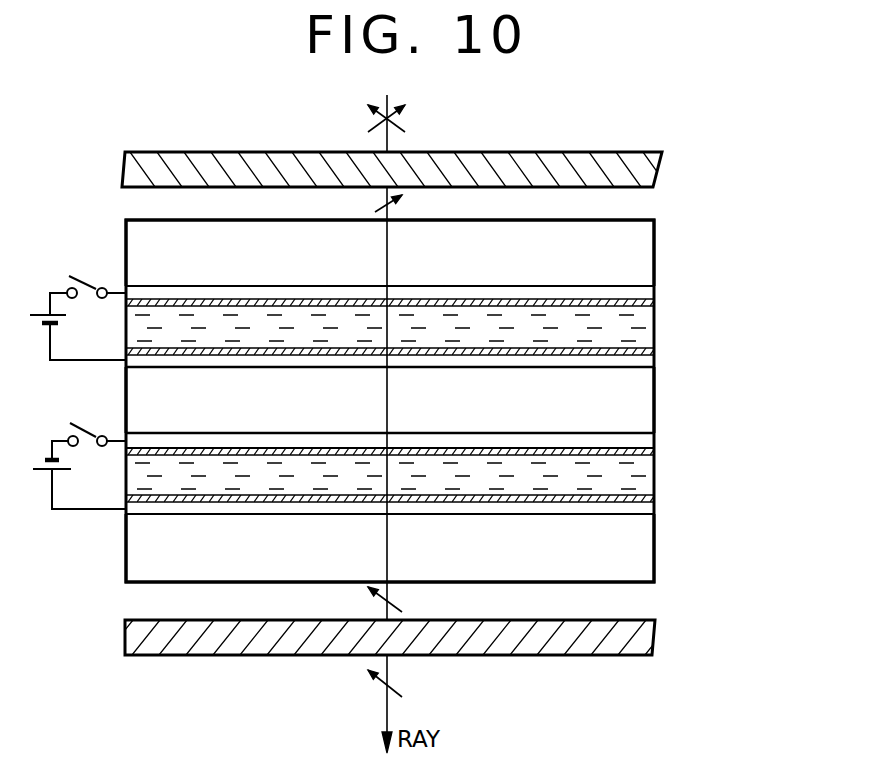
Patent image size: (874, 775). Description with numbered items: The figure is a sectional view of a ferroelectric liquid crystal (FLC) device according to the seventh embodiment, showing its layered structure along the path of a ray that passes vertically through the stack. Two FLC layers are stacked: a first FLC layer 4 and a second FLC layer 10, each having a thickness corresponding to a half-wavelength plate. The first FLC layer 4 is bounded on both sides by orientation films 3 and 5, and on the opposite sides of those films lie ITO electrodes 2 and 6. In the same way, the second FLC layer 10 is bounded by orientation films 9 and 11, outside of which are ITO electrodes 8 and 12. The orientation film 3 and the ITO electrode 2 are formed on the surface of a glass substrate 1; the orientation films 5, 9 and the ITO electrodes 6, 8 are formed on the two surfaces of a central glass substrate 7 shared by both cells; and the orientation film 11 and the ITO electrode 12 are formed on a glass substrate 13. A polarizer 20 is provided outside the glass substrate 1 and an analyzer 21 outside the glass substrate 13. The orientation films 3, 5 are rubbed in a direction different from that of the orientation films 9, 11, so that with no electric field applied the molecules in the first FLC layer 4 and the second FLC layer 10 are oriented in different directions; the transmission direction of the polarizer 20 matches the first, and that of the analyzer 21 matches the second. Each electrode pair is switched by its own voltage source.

The glass substrate 1 is at (655, 248).
The ITO electrode 2 is at (655, 293).
The orientation film 3 is at (655, 307).
The first FLC layer 4 is at (655, 328).
The orientation film 5 is at (655, 353).
The ITO electrode 6 is at (655, 368).
The glass substrate 7 is at (655, 415).
The ITO electrode 8 is at (655, 447).
The orientation film 9 is at (655, 455).
The second FLC layer 10 is at (655, 480).
The orientation film 11 is at (655, 500).
The ITO electrode 12 is at (655, 518).
The glass substrate 13 is at (655, 543).
The polarizer 20 is at (658, 172).
The analyzer 21 is at (655, 642).